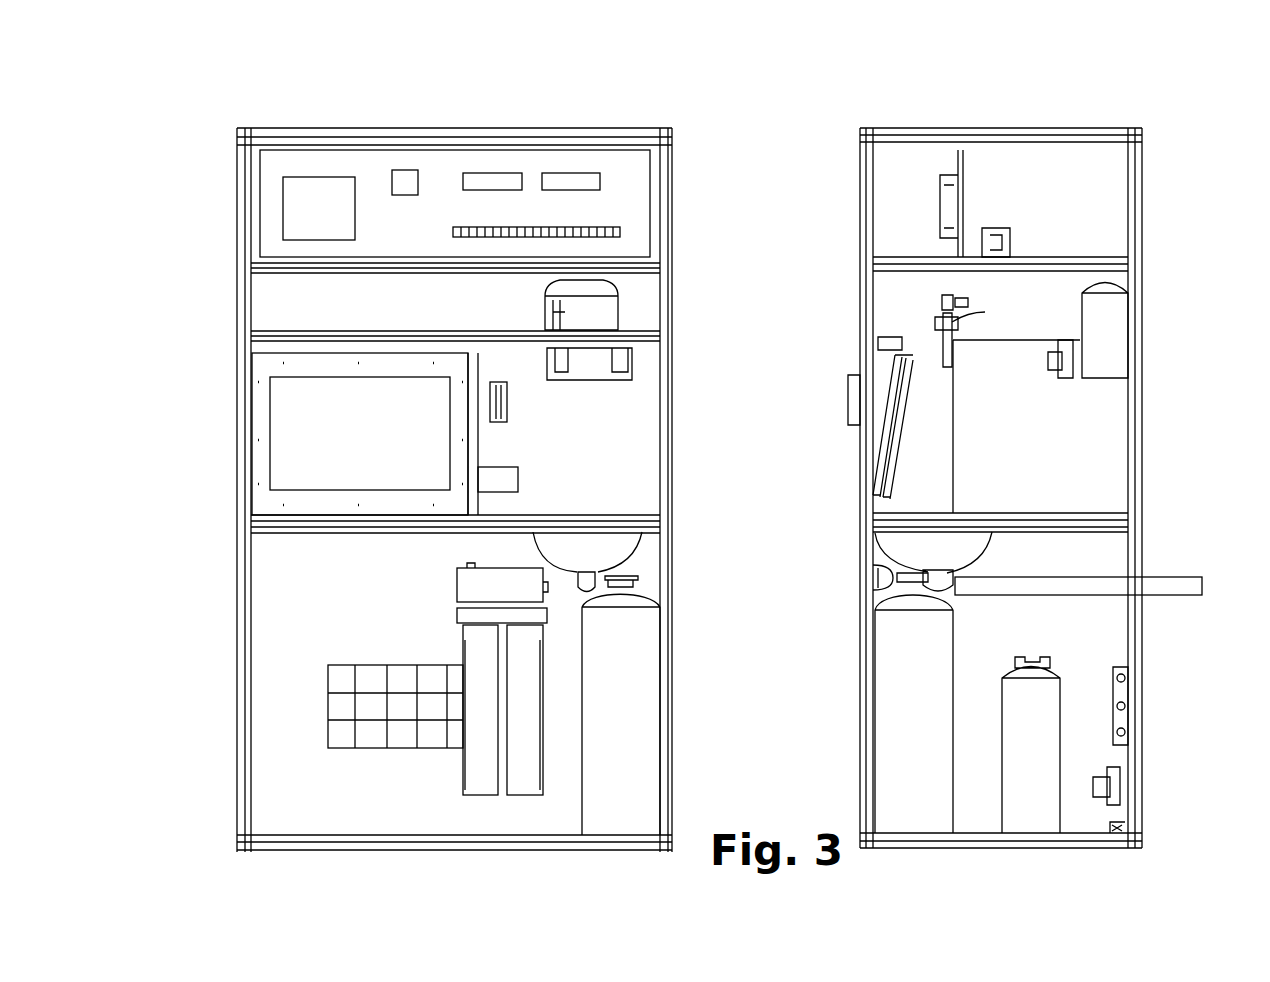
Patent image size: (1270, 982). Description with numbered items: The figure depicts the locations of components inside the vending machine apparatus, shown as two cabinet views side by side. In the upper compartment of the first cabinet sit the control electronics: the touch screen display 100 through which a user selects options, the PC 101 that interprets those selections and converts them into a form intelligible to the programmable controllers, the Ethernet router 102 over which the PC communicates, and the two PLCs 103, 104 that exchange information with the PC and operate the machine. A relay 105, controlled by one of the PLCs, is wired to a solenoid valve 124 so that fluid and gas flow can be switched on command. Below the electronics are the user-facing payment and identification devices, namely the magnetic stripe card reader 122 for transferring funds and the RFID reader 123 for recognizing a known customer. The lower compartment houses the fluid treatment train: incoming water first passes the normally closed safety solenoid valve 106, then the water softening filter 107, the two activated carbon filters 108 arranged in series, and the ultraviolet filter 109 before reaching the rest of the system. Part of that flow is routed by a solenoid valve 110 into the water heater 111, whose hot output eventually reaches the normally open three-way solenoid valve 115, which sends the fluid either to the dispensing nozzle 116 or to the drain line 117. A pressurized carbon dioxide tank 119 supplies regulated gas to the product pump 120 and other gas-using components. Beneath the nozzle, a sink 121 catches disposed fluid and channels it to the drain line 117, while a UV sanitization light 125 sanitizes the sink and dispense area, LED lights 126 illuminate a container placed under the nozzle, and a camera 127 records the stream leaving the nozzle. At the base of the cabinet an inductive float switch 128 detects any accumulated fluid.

The touch screen display 100 is at (280, 398).
The personal computer 101 is at (286, 194).
The Ethernet router 102 is at (405, 178).
The PLC 103 is at (507, 180).
The PLC 104 is at (590, 178).
The relay 105 is at (620, 228).
The safety solenoid valve 106 is at (1120, 767).
The water softening filter 107 is at (1040, 660).
The activated carbon filters 108 is at (458, 646).
The ultraviolet filter 109 is at (455, 584).
The solenoid valve 110 is at (1075, 361).
The water heater 111 is at (1120, 314).
The 3-way solenoid valve 115 is at (940, 288).
The dispensing nozzle 116 is at (933, 340).
The drain line 117 is at (1082, 575).
The carbon dioxide tank 119 is at (648, 600).
The product pump 120 is at (323, 650).
The sink 121 is at (636, 549).
The magnetic stripe card reader 122 is at (512, 412).
The RFID reader 123 is at (520, 483).
The solenoid valve 124 is at (1000, 235).
The UV sanitization light 125 is at (870, 342).
The LED lights 126 is at (935, 318).
The camera 127 is at (982, 312).
The inductive float switch 128 is at (1115, 828).